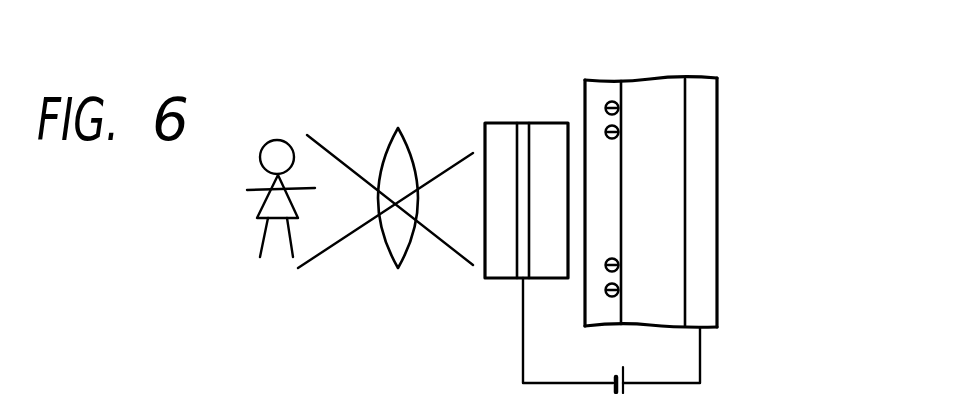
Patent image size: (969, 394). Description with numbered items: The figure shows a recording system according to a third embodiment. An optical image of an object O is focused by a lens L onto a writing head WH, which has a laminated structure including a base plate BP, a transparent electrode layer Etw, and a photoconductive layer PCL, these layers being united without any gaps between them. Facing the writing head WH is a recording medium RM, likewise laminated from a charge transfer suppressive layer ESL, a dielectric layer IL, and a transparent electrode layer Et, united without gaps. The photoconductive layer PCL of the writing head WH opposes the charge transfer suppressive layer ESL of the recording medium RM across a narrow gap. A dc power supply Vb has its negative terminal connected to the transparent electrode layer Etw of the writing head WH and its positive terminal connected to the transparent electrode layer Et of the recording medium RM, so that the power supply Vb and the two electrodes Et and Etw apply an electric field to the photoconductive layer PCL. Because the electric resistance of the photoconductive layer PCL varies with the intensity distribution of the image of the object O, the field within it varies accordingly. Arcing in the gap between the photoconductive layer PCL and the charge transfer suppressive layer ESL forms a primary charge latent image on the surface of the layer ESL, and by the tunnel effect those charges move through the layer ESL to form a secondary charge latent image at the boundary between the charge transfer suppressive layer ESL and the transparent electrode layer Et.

The object O is at (275, 138).
The lens L is at (395, 142).
The base plate BP is at (497, 137).
The transparent electrode layer Etw is at (522, 137).
The photoconductive layer PCL is at (552, 137).
The writing head WH is at (487, 288).
The dc power supply Vb is at (688, 392).
The recording medium RM is at (683, 189).
The charge transfer suppressive layer ESL is at (603, 93).
The dielectric layer IL is at (648, 93).
The transparent electrode layer Et is at (702, 110).